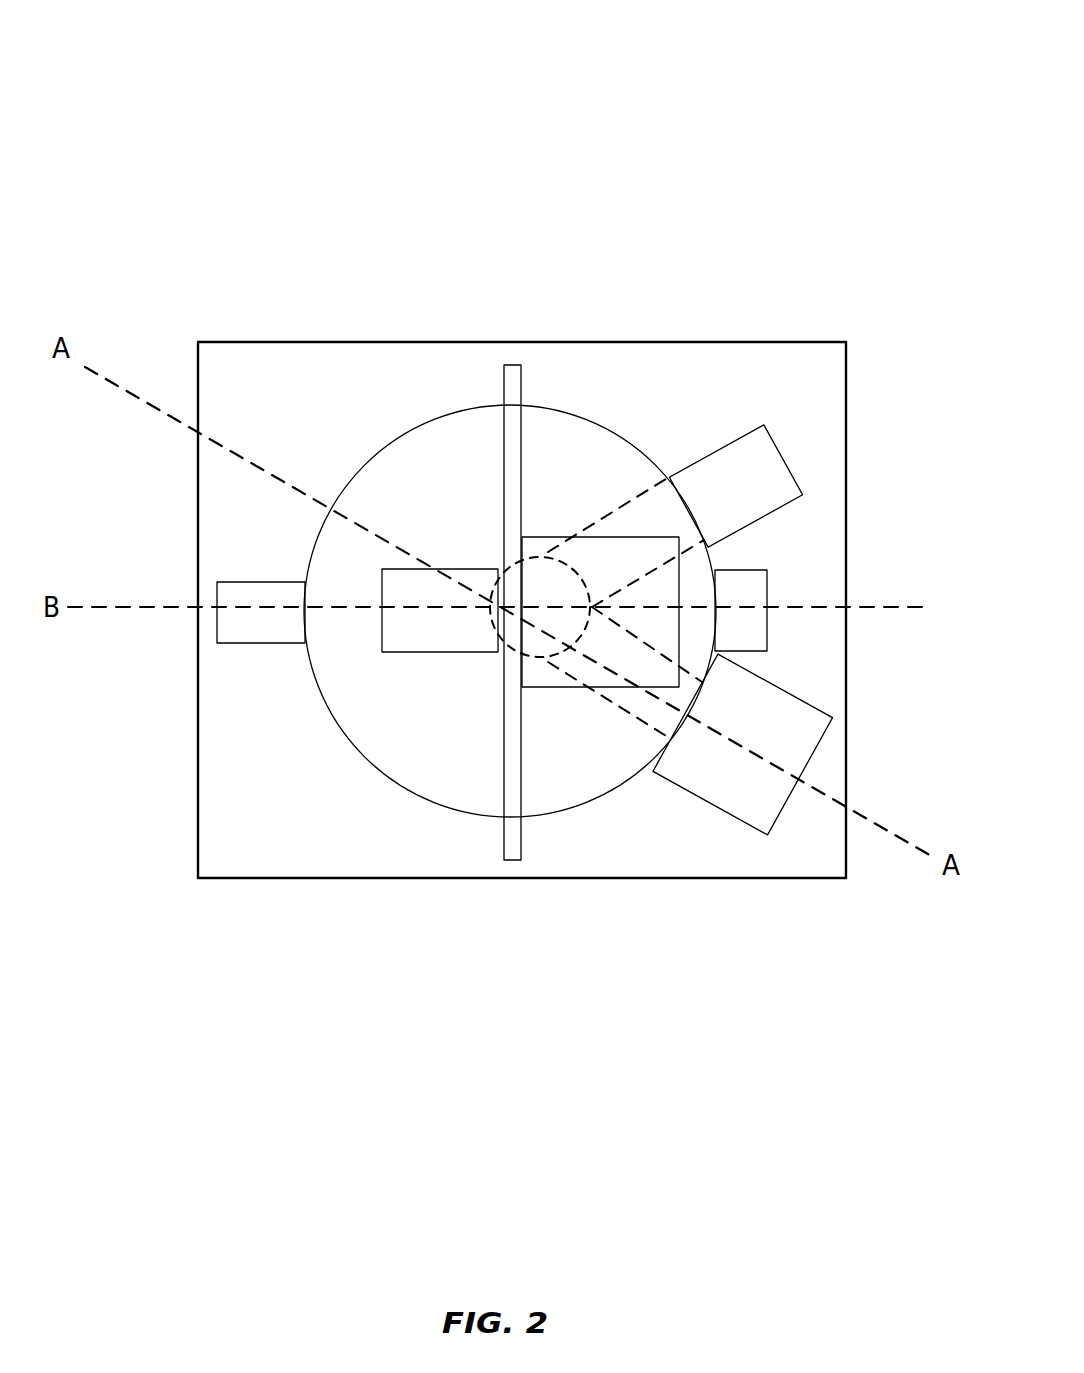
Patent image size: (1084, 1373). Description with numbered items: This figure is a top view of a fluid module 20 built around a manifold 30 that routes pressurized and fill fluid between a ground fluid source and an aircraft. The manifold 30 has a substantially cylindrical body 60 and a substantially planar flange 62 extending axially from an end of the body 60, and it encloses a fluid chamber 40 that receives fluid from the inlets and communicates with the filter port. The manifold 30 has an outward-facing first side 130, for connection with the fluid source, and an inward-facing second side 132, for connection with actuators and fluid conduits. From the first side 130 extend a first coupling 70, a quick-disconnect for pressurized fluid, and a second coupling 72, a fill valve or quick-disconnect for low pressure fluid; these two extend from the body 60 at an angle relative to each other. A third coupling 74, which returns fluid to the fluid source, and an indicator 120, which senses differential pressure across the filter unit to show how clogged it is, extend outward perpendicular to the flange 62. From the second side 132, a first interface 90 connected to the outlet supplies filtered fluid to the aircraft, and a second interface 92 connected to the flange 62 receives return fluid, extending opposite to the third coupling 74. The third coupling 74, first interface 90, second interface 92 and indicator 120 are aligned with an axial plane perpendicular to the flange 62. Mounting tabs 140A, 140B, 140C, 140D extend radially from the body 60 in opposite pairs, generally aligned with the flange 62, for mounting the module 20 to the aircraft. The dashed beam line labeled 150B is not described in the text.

The fluid module 20 is at (520, 441).
The manifold 30 is at (520, 529).
The fluid chamber 40 is at (540, 664).
The body 60 is at (408, 667).
The flange 62 is at (489, 782).
The first coupling 70 is at (722, 821).
The second coupling 72 is at (742, 419).
The third coupling 74 is at (540, 534).
The first interface 90 is at (228, 646).
The second interface 92 is at (400, 666).
The indicator 120 is at (778, 628).
The first side 130 is at (520, 529).
The second side 132 is at (320, 391).
The mounting tab 140A is at (493, 611).
The mounting tab 140B is at (493, 611).
The mounting tab 140C is at (461, 525).
The mounting tab 140D is at (513, 361).
The light beam 150B is at (618, 504).